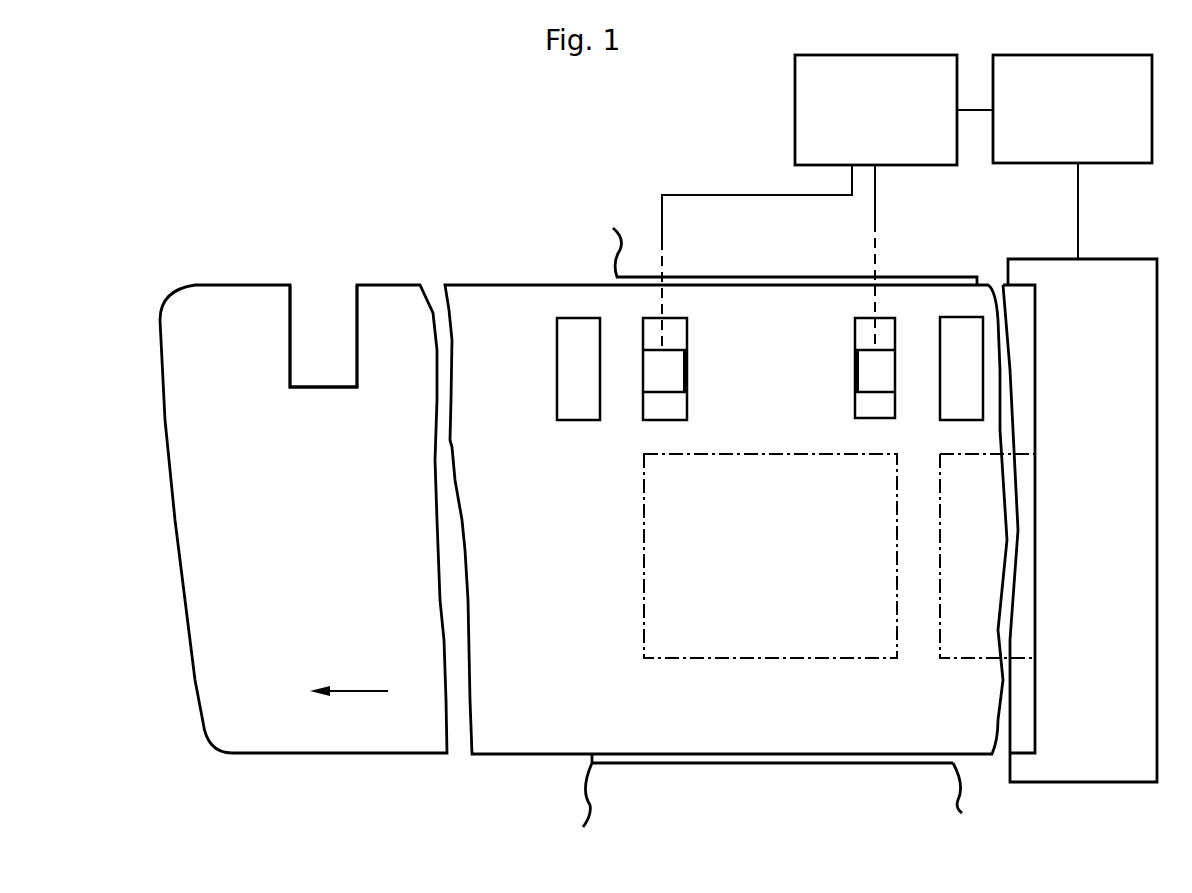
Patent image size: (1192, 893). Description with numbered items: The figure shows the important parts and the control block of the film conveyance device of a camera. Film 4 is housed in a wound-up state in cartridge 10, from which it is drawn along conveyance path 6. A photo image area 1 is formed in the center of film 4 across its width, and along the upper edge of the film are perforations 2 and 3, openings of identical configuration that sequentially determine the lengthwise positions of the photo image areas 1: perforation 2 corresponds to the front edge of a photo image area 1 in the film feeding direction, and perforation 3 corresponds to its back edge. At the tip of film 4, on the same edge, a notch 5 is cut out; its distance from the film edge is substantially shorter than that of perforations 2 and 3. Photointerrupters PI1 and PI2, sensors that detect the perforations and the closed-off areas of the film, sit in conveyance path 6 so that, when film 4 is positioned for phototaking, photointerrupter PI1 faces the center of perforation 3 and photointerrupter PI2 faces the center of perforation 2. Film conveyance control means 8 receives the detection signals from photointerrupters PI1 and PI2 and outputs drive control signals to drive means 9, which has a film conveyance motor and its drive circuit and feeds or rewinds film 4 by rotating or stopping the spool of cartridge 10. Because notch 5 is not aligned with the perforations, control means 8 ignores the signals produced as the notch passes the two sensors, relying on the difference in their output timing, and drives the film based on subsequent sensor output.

The photo image area 1 is at (644, 612).
The perforation 2 is at (641, 316).
The perforation 3 is at (557, 345).
The film 4 is at (387, 725).
The notch 5 is at (328, 316).
The conveyance path 6 is at (728, 296).
The film conveyance control means 8 is at (895, 55).
The drive means 9 is at (1085, 55).
The cartridge 10 is at (1122, 259).
The photointerrupter PI1 is at (868, 362).
The photointerrupter PI2 is at (658, 362).